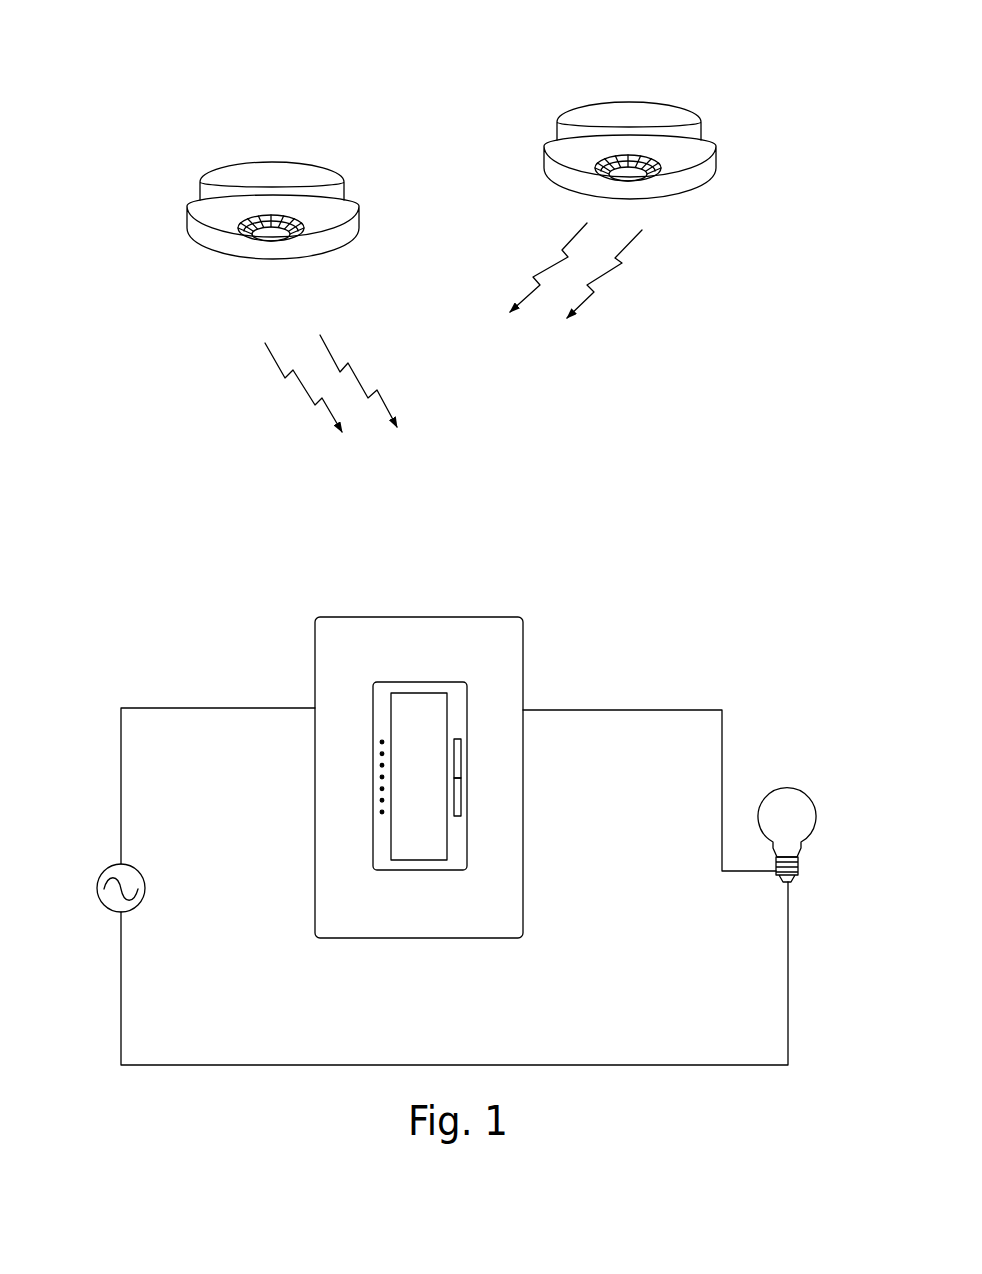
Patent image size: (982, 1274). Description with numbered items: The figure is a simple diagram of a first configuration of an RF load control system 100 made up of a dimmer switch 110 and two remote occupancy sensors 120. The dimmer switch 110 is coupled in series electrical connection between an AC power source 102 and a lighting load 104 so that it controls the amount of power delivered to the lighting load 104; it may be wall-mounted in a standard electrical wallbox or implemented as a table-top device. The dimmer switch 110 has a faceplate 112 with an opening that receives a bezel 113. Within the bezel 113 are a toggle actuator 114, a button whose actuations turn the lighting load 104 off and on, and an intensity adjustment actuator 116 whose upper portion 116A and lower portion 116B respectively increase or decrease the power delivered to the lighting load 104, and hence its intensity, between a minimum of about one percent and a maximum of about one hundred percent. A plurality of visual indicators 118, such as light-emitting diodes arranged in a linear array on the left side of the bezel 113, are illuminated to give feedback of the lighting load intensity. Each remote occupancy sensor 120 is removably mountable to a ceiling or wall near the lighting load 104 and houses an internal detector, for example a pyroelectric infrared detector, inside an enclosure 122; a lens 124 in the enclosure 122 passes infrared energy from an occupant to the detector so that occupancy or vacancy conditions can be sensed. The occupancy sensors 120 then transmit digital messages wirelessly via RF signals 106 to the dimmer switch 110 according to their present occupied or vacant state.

The RF load control system 100 is at (412, 115).
The AC power source 102 is at (105, 908).
The lighting load 104 is at (787, 807).
The RF signals 106 is at (455, 417).
The dimmer switch 110 is at (298, 645).
The faceplate 112 is at (380, 647).
The bezel 113 is at (377, 857).
The toggle actuator 114 is at (430, 853).
The intensity adjustment actuator 116 is at (475, 777).
The upper portion 116A is at (458, 759).
The lower portion 116B is at (458, 793).
The visual indicators 118 is at (374, 778).
The remote occupancy sensor 120 is at (153, 207).
The enclosure 122 is at (258, 192).
The lens 124 is at (270, 237).